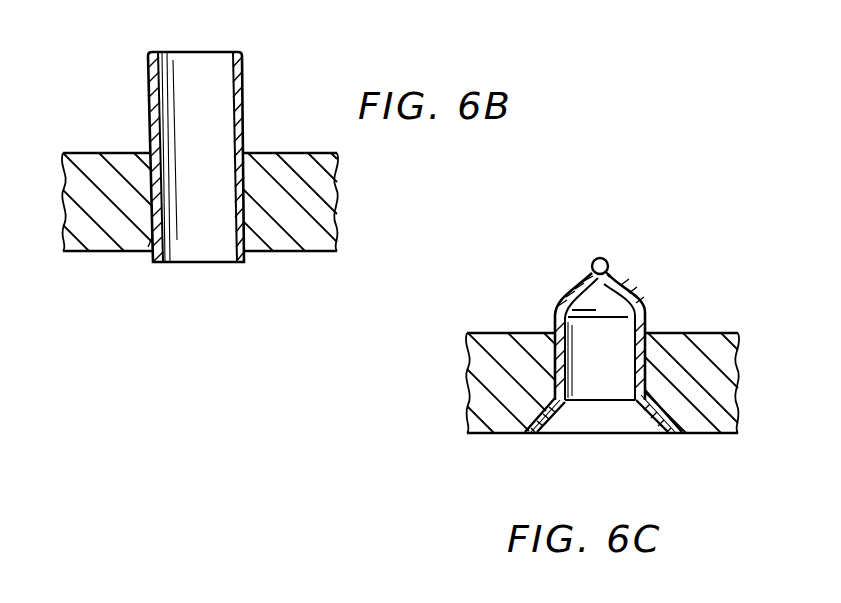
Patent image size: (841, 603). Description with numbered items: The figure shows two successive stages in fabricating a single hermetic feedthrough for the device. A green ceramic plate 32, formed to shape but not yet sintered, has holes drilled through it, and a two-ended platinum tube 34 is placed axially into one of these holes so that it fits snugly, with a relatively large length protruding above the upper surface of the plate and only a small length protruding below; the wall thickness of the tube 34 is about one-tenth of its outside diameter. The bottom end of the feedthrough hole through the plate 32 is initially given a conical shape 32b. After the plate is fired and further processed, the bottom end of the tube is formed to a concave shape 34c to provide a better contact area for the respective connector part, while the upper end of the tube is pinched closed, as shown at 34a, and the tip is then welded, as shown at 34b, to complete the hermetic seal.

In FIG. 6B, the green ceramic plate 32 is at (318, 203).
In FIG. 6C, the green ceramic plate 32 is at (486, 390).
In FIG. 6B, the conical bottom end of feedthrough hole 32b is at (150, 227).
In FIG. 6B, the platinum tube 34 is at (243, 121).
In FIG. 6C, the platinum tube 34 is at (646, 334).
In FIG. 6C, the pinched upper end of tube 34a is at (623, 291).
In FIG. 6C, the welded tip of tube 34b is at (593, 271).
In FIG. 6C, the concave bottom end of tube 34c is at (659, 424).